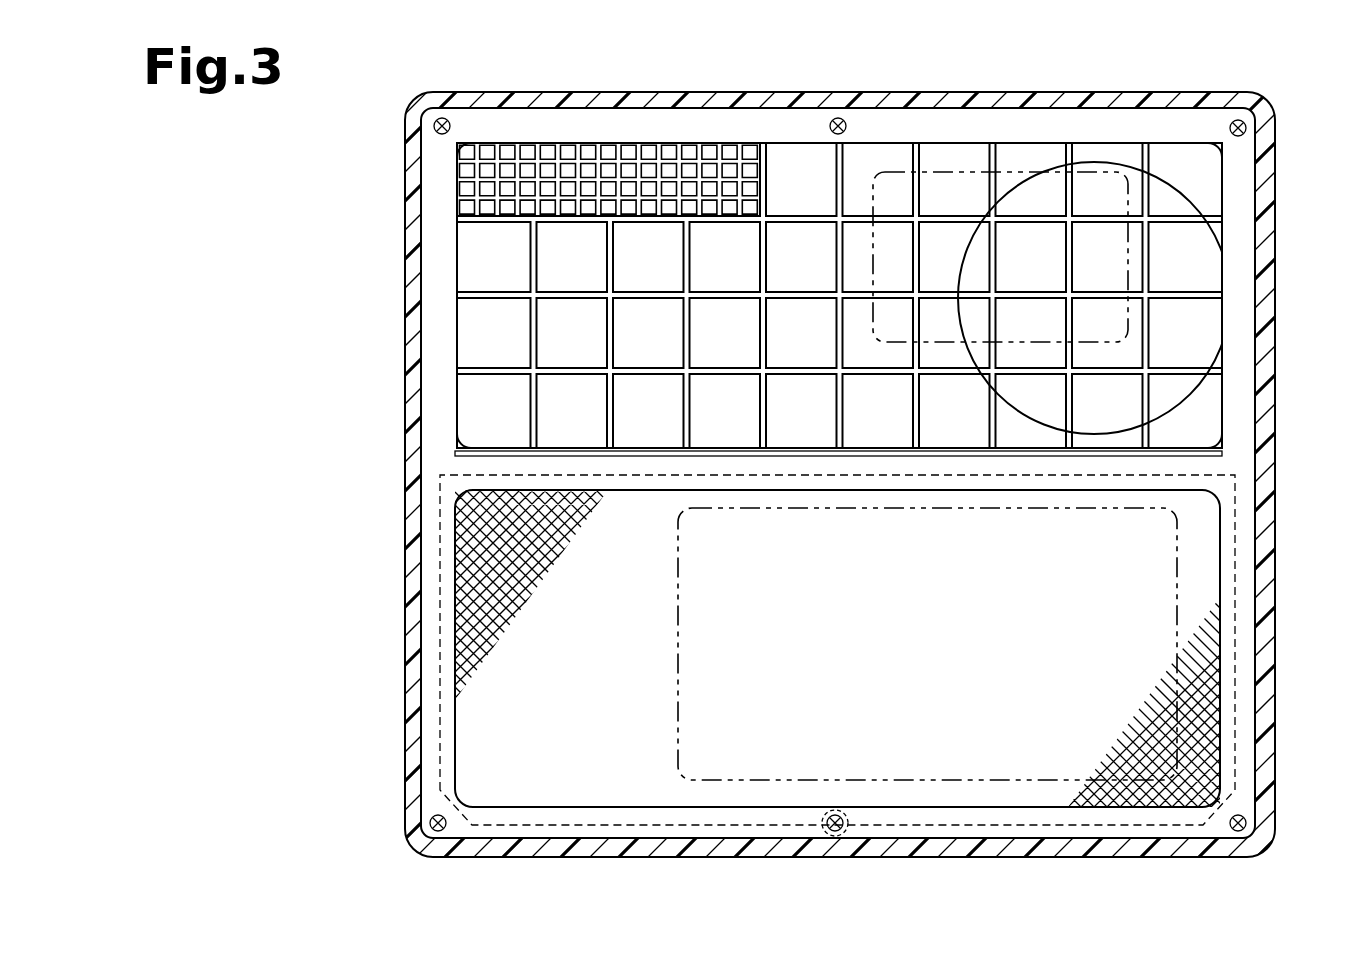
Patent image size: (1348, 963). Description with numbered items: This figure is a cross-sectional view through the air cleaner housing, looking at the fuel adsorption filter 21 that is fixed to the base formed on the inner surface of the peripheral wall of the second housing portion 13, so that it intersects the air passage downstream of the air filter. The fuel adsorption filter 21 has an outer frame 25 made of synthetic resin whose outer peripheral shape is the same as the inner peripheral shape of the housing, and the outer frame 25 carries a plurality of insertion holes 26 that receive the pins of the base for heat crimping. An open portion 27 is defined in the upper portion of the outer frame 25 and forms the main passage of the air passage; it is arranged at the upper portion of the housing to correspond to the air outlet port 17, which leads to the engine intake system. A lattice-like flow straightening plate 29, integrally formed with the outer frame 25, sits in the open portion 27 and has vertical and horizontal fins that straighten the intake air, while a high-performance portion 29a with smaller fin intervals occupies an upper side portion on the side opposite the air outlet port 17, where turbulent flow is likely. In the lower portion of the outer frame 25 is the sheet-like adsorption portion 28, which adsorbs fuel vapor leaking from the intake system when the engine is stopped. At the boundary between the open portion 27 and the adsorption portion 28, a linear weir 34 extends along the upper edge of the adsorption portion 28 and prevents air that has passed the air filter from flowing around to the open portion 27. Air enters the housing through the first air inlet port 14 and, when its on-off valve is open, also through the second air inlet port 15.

The second housing portion 13 is at (633, 92).
The first air inlet port 14 is at (680, 698).
The second air inlet port 15 is at (893, 343).
The air outlet port 17 is at (1004, 406).
The fuel adsorption filter 21 is at (938, 117).
The outer frame 25 is at (1082, 112).
The insertion holes 26 is at (442, 118).
The open portion 27 is at (841, 249).
The adsorption portion 28 is at (1205, 548).
The flow straightening plate 29 is at (470, 360).
The high-performance portion 29a is at (510, 143).
The weir 34 is at (1208, 465).